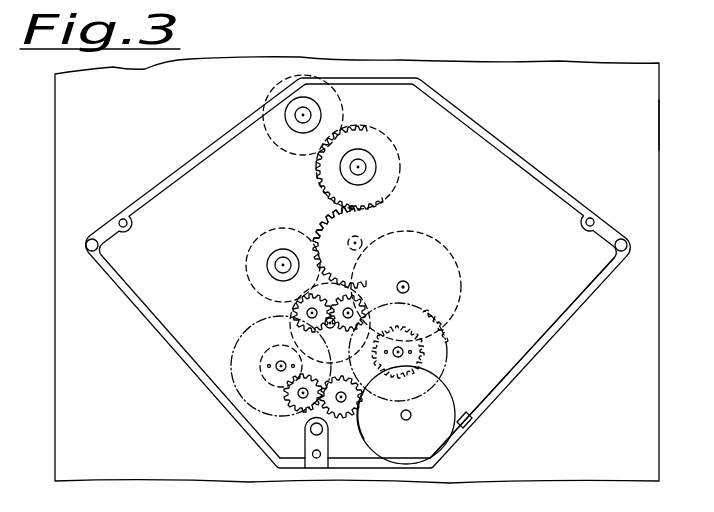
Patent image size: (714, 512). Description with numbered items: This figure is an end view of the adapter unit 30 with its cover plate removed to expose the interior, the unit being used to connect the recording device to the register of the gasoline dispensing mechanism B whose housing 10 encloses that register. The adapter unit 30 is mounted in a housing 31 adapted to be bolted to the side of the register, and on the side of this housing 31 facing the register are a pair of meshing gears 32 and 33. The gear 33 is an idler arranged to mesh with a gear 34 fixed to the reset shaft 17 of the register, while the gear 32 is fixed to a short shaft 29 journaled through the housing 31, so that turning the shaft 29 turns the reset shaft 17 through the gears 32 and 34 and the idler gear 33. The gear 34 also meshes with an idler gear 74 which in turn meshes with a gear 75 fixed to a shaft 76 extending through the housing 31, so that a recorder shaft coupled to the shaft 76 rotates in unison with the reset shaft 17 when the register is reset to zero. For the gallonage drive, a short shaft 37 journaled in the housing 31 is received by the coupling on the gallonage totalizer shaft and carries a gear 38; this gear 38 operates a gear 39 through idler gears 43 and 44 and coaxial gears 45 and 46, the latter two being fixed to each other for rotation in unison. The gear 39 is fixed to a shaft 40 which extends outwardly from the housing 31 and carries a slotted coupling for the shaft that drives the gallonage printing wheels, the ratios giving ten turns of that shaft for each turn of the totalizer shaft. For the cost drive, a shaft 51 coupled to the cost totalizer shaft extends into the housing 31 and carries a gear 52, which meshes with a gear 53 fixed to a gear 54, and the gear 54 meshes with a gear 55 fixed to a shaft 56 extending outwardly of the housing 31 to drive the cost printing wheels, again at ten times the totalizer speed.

The housing 10 is at (655, 83).
The gasoline dispensing mechanism B is at (660, 125).
The adapter unit 30 is at (551, 168).
The housing 31 is at (565, 325).
The short shaft 29 is at (300, 113).
The gear 32 is at (297, 152).
The idler gear 33 is at (350, 132).
The gear 34 is at (380, 204).
The reset shaft 17 is at (382, 237).
The idler gear 74 is at (309, 232).
The gear 75 is at (323, 287).
The shaft 40 is at (309, 310).
The gear 39 is at (293, 314).
The shaft 56 is at (349, 306).
The shaft 76 is at (331, 328).
The gear 55 is at (392, 286).
The shaft 51 is at (406, 282).
The gear 54 is at (386, 307).
The gear 52 is at (446, 320).
The gear 53 is at (445, 336).
The coaxial gear 46 is at (258, 352).
The coaxial gear 45 is at (284, 392).
The idler gear 43 is at (343, 418).
The idler gear 44 is at (316, 408).
The short shaft 37 is at (410, 413).
The gear 38 is at (363, 430).